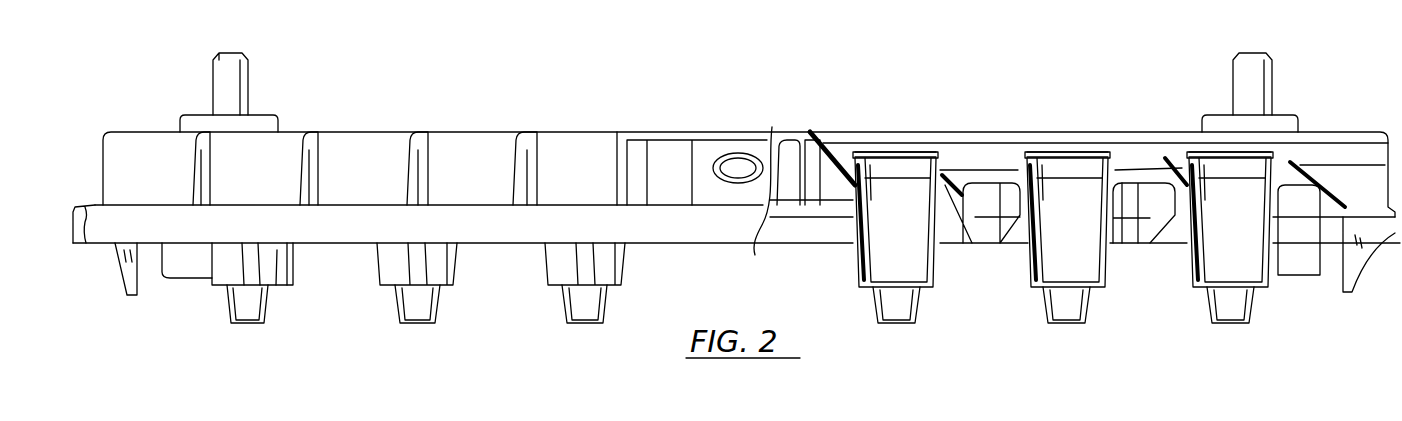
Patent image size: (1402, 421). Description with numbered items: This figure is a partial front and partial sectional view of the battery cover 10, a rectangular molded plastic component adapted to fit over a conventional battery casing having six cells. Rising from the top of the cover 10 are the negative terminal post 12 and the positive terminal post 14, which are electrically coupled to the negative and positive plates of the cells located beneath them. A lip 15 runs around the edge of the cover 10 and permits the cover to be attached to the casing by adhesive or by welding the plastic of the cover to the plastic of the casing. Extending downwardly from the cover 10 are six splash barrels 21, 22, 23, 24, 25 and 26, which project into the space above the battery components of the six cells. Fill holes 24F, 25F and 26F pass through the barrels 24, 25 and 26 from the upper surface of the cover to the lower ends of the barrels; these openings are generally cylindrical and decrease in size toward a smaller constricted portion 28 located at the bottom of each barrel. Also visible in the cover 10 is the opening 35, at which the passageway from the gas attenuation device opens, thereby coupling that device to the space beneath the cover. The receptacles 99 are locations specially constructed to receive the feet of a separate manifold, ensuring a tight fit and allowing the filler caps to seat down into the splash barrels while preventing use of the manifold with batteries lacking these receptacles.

The cover 10 is at (736, 188).
The negative terminal post 12 is at (248, 79).
The positive terminal post 14 is at (1272, 73).
The lip 15 is at (94, 205).
The splash barrel 21 is at (277, 252).
The splash barrel 22 is at (455, 272).
The splash barrel 23 is at (625, 272).
The splash barrel 24 is at (886, 189).
The fill hole 24F is at (925, 152).
The splash barrel 25 is at (1031, 189).
The fill hole 25F is at (1055, 152).
The splash barrel 26 is at (1248, 189).
The fill hole 26F is at (1270, 152).
The constricted portion 28 is at (227, 318).
The opening 35 is at (733, 165).
The receptacle 99 is at (1128, 178).